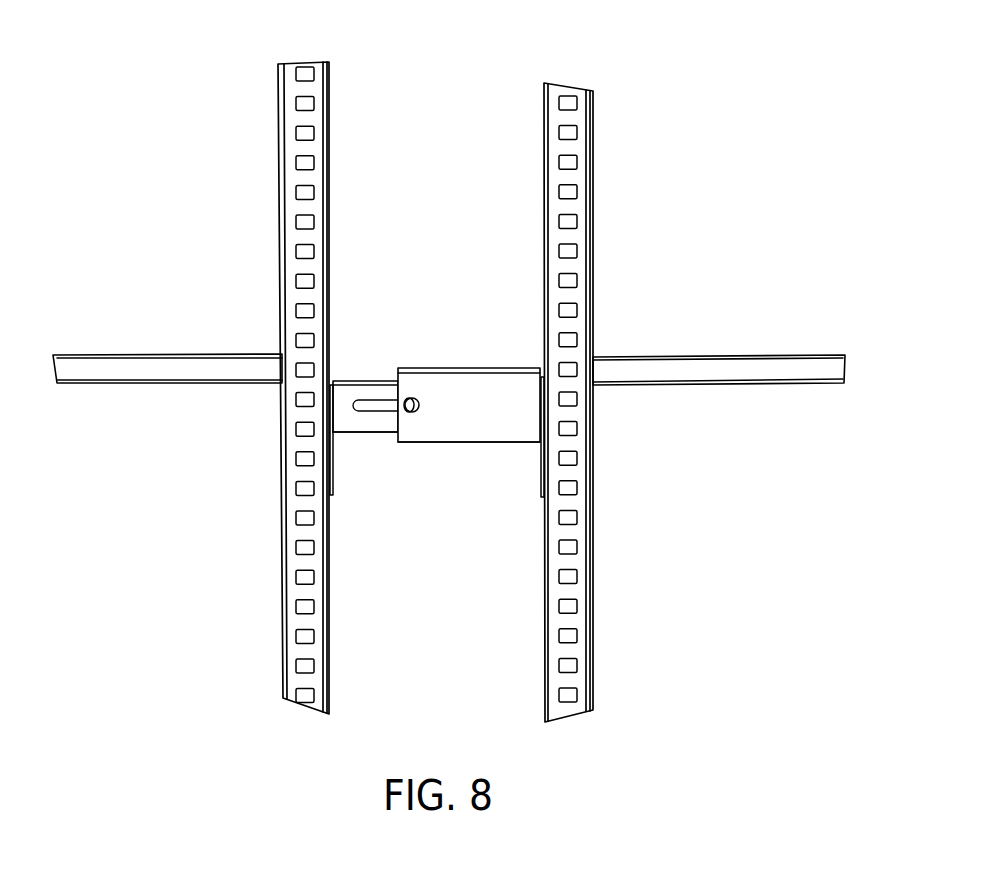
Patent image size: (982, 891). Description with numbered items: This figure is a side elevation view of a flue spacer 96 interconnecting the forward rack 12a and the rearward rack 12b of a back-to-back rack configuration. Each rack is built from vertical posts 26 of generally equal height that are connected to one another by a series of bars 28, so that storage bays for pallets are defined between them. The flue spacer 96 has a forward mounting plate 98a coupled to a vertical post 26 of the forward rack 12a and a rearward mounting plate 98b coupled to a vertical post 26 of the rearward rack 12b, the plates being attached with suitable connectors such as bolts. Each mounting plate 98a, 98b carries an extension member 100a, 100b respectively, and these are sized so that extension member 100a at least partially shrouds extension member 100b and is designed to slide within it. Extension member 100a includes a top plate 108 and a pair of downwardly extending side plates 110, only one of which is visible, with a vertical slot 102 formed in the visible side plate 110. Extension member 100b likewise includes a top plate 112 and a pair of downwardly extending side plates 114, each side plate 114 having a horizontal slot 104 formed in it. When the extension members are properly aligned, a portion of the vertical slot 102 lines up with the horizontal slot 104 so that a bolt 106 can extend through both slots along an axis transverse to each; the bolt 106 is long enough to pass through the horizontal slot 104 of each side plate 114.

The forward rack 12a is at (722, 243).
The rearward rack 12b is at (186, 245).
The vertical post 26 is at (277, 90).
The bar 28 is at (93, 373).
The flue spacer 96 is at (446, 222).
The forward mounting plate 98a is at (541, 485).
The rearward mounting plate 98b is at (331, 490).
The extension member 100a is at (469, 425).
The extension member 100b is at (375, 412).
The vertical slot 102 is at (413, 398).
The horizontal slot 104 is at (376, 400).
The bolt 106 is at (419, 404).
The top plate 108 is at (482, 367).
The side plate 110 is at (490, 435).
The top plate 112 is at (350, 380).
The side plate 114 is at (373, 433).